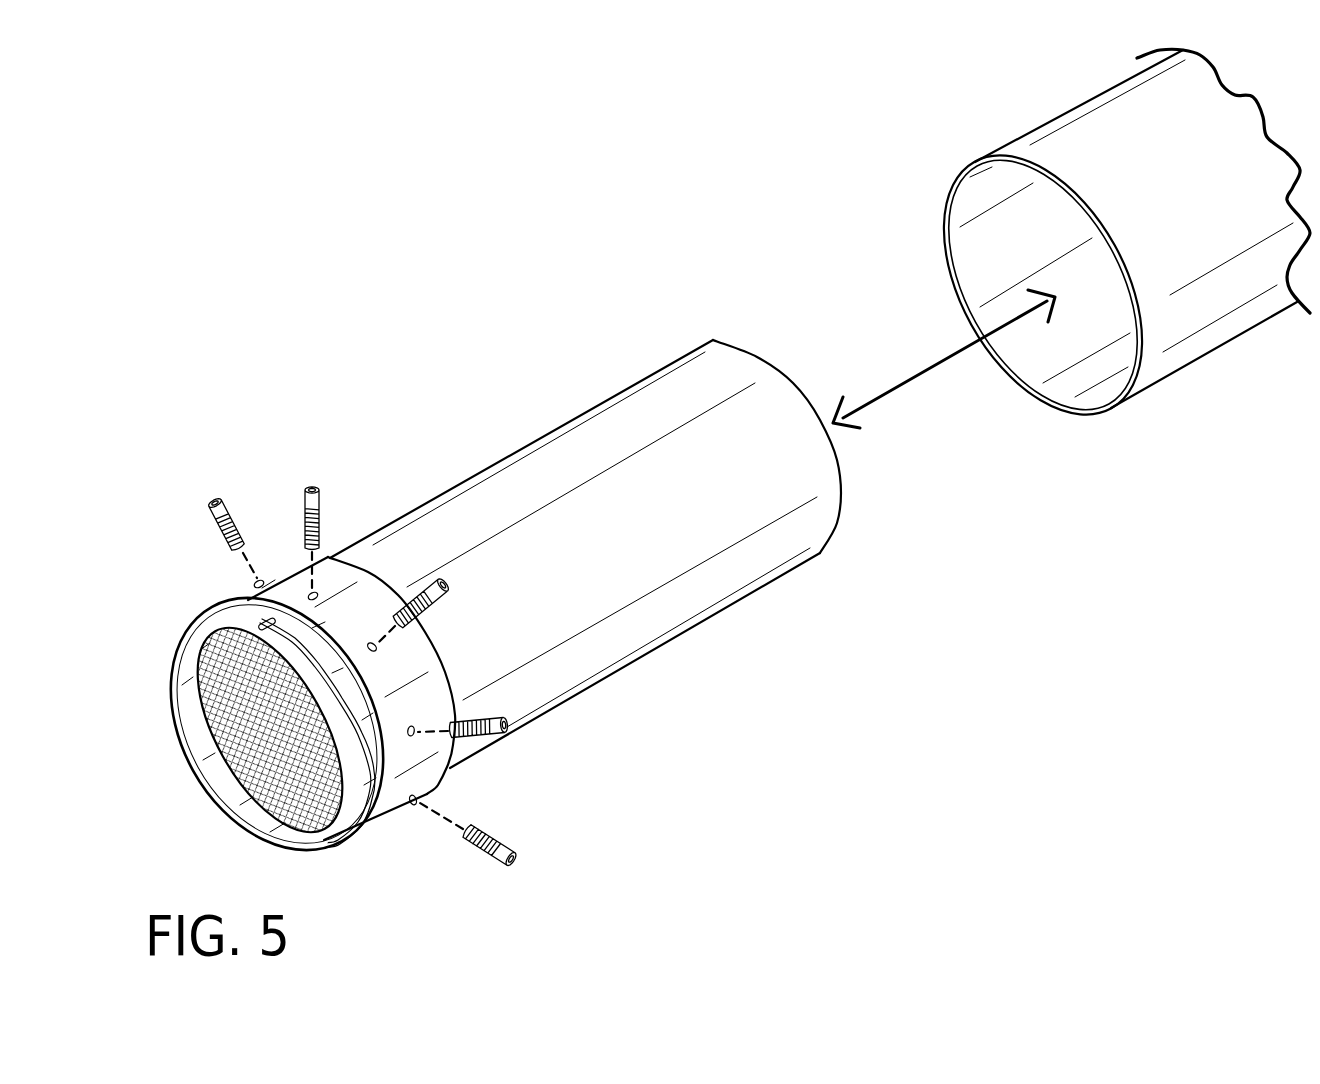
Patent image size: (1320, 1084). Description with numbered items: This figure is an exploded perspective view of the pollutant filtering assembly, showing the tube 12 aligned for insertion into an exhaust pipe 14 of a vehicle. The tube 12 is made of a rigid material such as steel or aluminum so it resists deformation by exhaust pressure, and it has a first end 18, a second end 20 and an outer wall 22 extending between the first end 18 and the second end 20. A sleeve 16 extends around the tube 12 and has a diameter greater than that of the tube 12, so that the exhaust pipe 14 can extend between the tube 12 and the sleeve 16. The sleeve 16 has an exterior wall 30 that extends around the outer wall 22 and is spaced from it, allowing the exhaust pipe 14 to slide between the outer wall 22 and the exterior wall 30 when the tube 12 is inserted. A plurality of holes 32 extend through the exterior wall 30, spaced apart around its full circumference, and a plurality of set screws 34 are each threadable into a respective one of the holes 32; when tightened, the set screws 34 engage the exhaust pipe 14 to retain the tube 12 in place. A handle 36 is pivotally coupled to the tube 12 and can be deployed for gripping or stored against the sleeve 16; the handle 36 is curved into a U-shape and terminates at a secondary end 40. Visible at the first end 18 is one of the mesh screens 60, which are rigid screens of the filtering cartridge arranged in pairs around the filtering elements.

The tube 12 is at (515, 452).
The exhaust pipe 14 is at (1017, 140).
The sleeve 16 is at (414, 805).
The first end 18 is at (202, 776).
The second end 20 is at (737, 343).
The outer wall 22 is at (683, 598).
The exterior wall 30 is at (247, 595).
The holes 32 is at (301, 579).
The set screws 34 is at (213, 500).
The handle 36 is at (372, 797).
The secondary end 40 is at (265, 621).
The mesh screens 60 is at (220, 692).